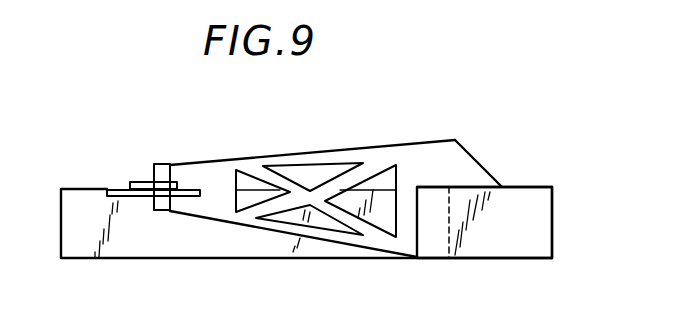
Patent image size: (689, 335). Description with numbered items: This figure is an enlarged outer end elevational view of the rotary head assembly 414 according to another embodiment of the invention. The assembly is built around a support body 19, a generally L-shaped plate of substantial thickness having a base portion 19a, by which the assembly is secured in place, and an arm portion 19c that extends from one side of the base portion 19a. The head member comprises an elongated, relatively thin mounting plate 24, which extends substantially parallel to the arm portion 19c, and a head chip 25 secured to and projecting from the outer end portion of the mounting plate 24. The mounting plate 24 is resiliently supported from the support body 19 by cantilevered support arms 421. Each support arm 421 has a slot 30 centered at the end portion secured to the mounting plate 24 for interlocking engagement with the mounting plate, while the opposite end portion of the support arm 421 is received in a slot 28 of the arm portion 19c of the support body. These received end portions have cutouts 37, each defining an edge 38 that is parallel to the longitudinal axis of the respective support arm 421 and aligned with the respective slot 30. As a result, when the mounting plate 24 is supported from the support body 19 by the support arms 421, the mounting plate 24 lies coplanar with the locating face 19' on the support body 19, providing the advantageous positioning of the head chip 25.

The support body 19 is at (297, 197).
The base portion 19a is at (125, 247).
The arm portion 19c is at (609, 254).
The locating face 19' is at (484, 159).
The mounting plate 24 is at (108, 197).
The head chip 25 is at (163, 180).
The slots 28 is at (449, 233).
The slots 30 is at (163, 191).
The cutouts 37 is at (456, 191).
The edge 38 is at (462, 187).
The rotary head assembly 414 is at (565, 194).
The cantilevered support arms 421 is at (423, 150).